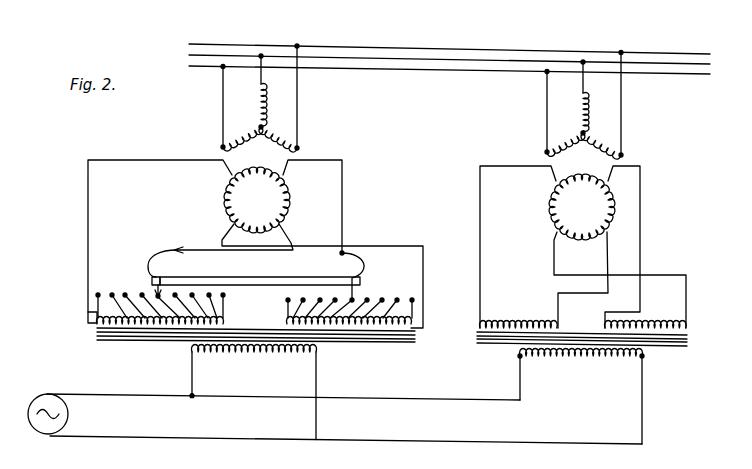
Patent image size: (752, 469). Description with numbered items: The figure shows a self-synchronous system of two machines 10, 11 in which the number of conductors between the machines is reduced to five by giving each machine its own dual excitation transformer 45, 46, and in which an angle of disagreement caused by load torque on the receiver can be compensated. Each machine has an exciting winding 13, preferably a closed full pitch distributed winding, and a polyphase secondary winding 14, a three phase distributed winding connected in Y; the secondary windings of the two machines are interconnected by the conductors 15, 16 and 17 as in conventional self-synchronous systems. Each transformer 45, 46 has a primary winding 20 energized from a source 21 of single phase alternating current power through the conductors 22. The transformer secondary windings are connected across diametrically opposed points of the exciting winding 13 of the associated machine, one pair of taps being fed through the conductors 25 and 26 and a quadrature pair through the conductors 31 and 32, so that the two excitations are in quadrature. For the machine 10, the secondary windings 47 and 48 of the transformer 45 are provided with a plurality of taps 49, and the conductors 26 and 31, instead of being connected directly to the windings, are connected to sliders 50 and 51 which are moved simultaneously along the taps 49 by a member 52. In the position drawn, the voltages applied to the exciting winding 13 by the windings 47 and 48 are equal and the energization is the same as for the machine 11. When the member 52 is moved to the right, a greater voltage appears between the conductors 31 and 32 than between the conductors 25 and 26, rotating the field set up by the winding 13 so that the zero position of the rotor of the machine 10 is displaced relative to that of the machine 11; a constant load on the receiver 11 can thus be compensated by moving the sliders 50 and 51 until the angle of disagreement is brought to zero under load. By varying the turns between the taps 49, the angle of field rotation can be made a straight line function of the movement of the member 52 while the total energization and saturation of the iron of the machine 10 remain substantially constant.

The machine 10 is at (317, 150).
The machine 11 is at (631, 164).
The exciting winding 13 is at (294, 197).
The polyphase secondary winding 14 is at (265, 112).
The conductor 15 is at (339, 66).
The conductor 16 is at (378, 57).
The conductor 17 is at (408, 47).
The primary winding 20 is at (255, 354).
The source 21 is at (47, 435).
The conductors 22 is at (133, 407).
The conductor 25 is at (220, 243).
The conductor 26 is at (343, 192).
The conductor 31 is at (295, 253).
The conductor 32 is at (153, 160).
The dual excitation transformer 45 is at (426, 340).
The dual excitation transformer 46 is at (698, 345).
The secondary winding 47 is at (287, 319).
The secondary winding 48 is at (88, 312).
The taps 49 is at (120, 293).
The slider 50 is at (354, 297).
The slider 51 is at (152, 281).
The member 52 is at (266, 277).